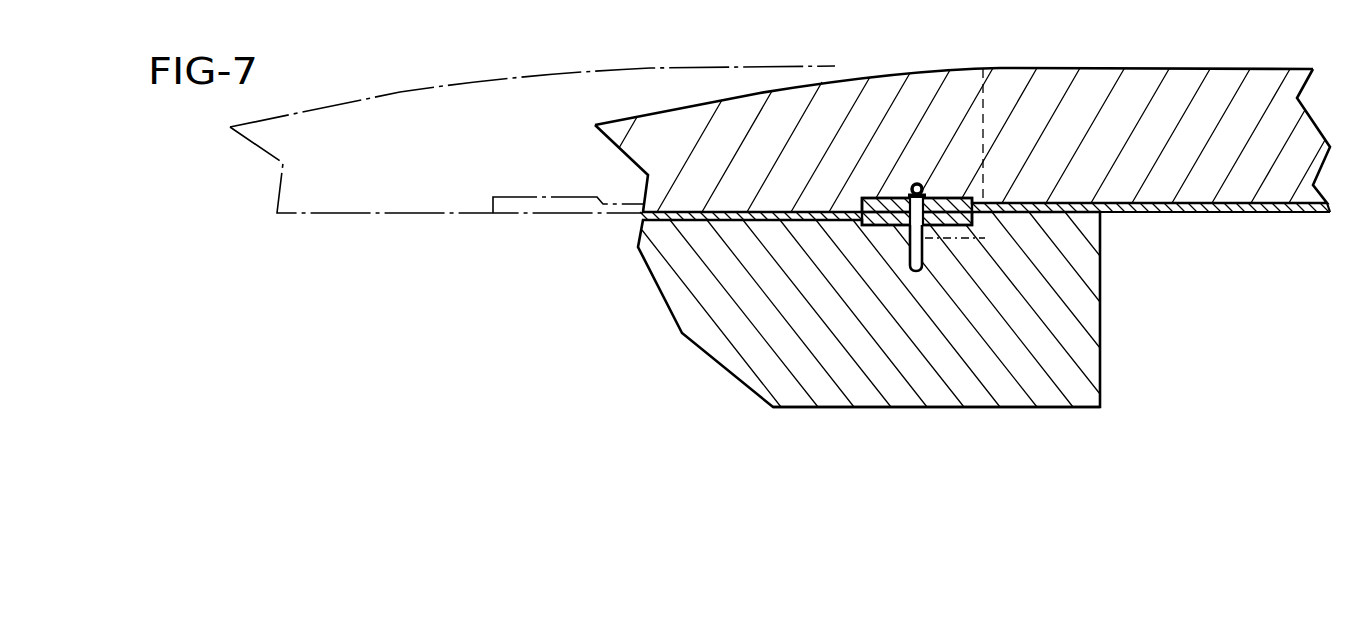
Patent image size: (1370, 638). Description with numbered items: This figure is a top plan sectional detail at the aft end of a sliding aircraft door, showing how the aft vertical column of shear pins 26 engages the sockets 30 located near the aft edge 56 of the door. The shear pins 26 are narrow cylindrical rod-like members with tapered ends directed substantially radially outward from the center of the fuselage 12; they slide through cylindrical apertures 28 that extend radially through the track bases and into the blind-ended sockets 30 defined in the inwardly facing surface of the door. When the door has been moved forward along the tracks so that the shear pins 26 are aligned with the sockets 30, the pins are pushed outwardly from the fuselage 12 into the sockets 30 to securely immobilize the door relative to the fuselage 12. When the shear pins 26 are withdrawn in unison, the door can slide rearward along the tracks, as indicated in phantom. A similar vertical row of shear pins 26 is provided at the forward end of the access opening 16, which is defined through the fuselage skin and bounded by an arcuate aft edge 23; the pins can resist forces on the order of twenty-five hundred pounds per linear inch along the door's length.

The fuselage 12 is at (911, 414).
The access opening 16 is at (1233, 252).
The aft edge 23 is at (1100, 337).
The shear pins 26 is at (923, 250).
The cylindrical apertures 28 is at (985, 237).
The sockets 30 is at (911, 192).
The aft edge 56 is at (706, 100).